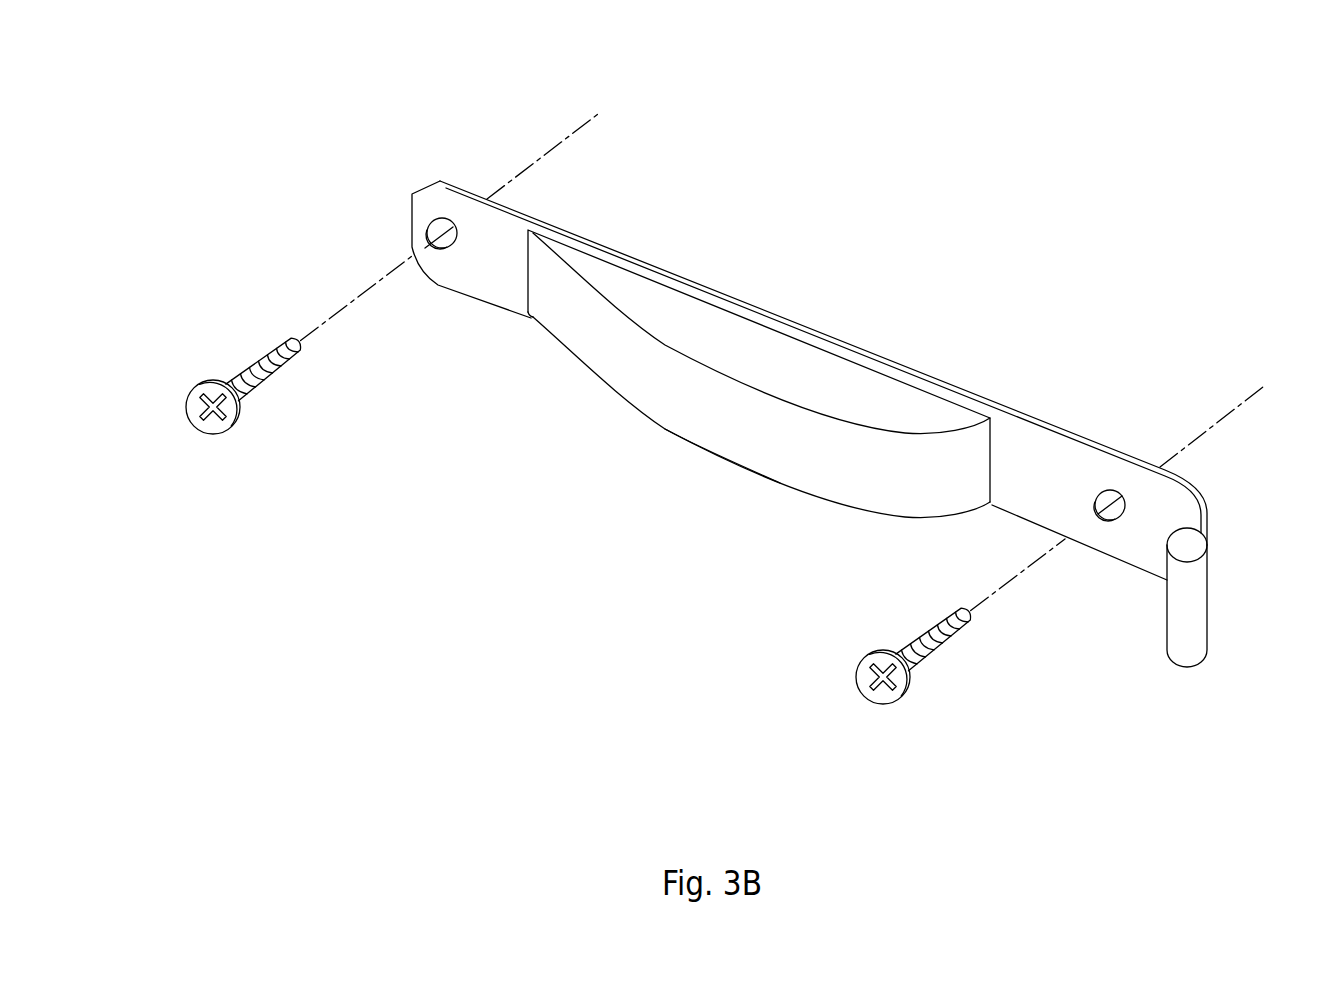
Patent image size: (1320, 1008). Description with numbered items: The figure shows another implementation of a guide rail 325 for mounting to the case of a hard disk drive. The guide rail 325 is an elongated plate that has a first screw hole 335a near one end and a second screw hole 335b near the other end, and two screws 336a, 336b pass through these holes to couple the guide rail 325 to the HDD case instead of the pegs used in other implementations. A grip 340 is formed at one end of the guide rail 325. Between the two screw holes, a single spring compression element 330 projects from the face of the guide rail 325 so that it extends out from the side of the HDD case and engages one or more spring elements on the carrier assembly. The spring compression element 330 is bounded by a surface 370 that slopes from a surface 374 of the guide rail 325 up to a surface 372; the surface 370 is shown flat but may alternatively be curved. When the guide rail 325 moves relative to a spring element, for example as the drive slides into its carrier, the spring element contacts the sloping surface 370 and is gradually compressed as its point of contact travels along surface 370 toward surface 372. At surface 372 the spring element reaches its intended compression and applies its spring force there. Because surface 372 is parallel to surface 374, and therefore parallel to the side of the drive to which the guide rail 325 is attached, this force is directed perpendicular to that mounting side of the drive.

The guide rail 325 is at (1105, 122).
The spring compression element 330 is at (618, 565).
The first screw hole 335a is at (434, 250).
The second screw hole 335b is at (1107, 518).
The screw 336a is at (218, 435).
The screw 336b is at (888, 705).
The grip 340 is at (1143, 657).
The surface 370 is at (575, 338).
The surface 372 is at (710, 442).
The surface 374 is at (490, 280).